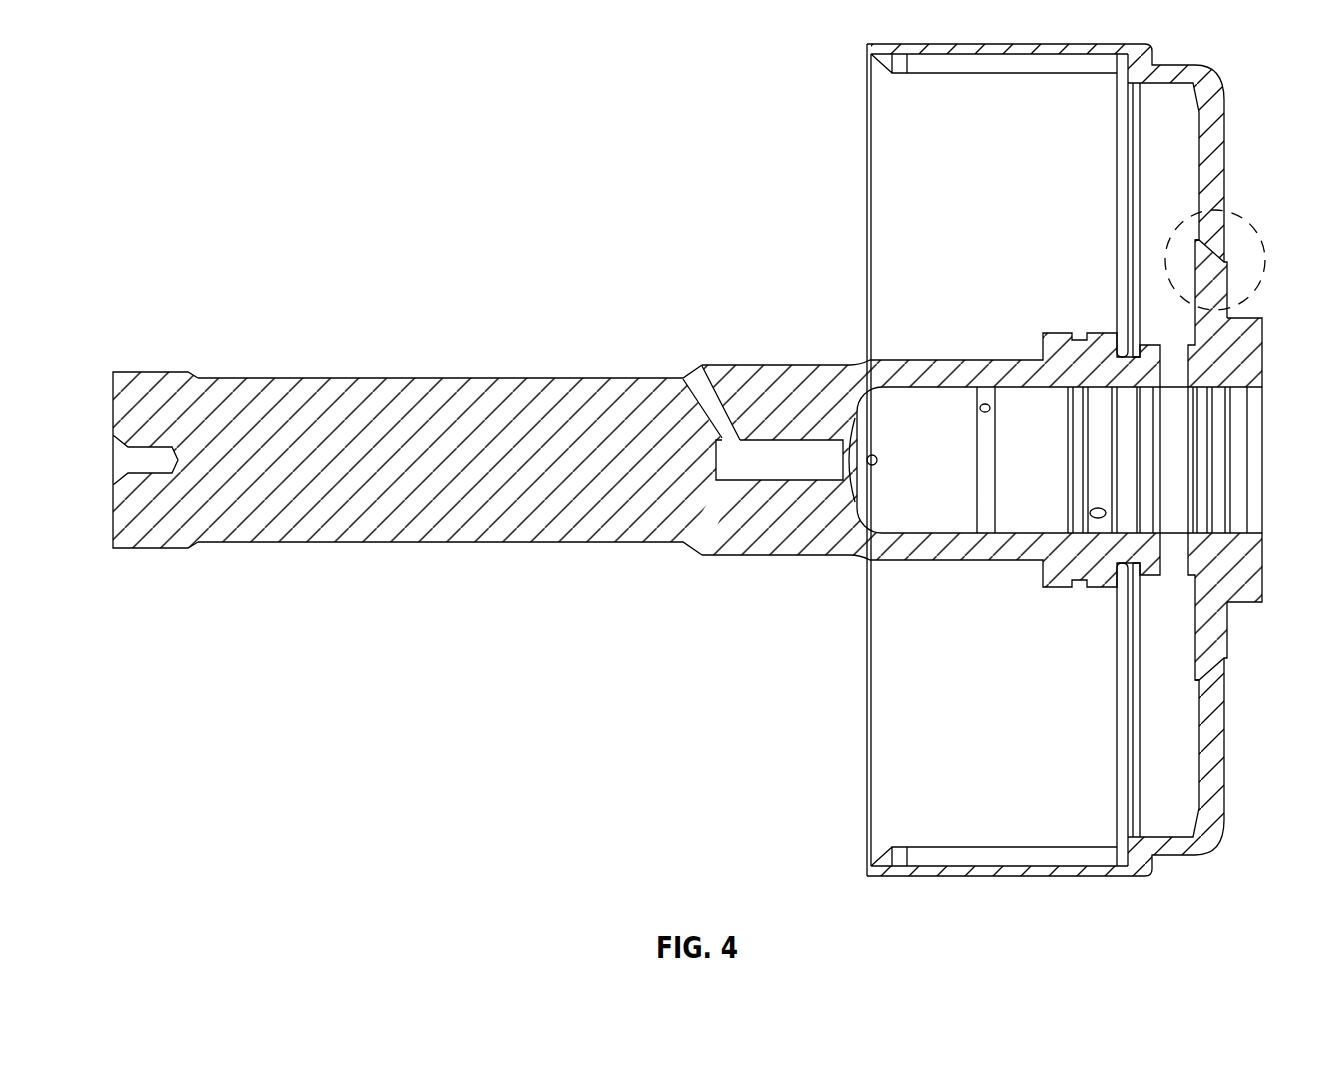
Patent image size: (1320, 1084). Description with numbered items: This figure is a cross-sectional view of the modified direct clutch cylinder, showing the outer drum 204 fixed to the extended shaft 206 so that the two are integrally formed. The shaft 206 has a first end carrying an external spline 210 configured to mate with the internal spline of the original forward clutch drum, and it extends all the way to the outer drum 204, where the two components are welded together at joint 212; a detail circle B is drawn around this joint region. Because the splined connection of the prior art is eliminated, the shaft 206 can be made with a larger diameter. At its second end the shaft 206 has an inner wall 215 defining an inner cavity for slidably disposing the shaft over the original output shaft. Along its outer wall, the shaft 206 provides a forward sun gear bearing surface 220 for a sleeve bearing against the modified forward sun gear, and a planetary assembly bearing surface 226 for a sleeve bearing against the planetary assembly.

The outer drum 204 is at (1208, 80).
The extended shaft 206 is at (484, 376).
The external spline 210 is at (152, 370).
The joint 212 is at (1226, 250).
The inner wall 215 is at (948, 392).
The forward sun gear bearing surface 220 is at (802, 364).
The planetary assembly bearing surface 226 is at (947, 359).
The detail B is at (1250, 293).